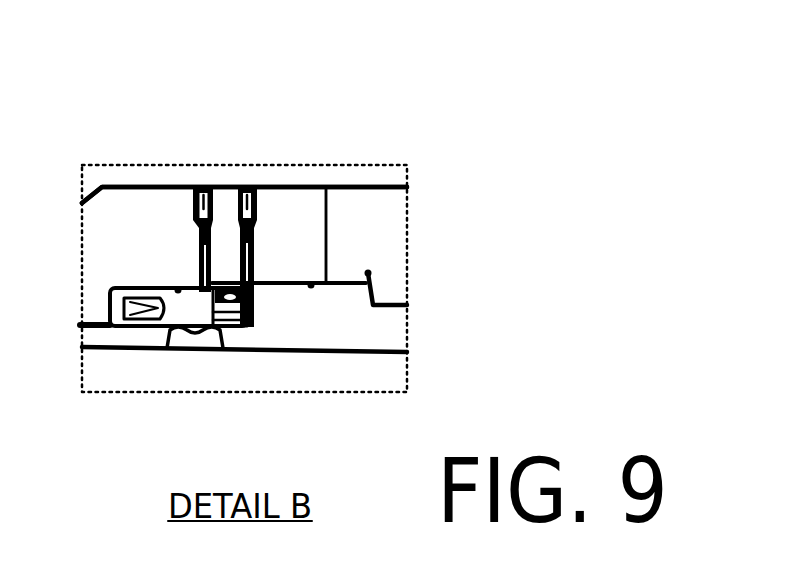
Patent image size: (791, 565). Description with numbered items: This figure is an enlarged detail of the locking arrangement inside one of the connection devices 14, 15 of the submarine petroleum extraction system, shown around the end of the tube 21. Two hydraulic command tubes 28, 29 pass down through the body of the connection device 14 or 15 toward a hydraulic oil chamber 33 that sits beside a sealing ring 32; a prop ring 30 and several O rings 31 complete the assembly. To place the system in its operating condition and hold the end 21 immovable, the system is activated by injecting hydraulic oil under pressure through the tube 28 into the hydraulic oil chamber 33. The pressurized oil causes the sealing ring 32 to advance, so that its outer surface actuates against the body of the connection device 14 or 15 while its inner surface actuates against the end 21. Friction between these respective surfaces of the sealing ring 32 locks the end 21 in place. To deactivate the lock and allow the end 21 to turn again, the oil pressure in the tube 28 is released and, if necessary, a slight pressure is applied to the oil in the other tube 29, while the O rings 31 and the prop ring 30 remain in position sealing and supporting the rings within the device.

The connection device 14 is at (321, 241).
The connection device 15 is at (386, 264).
The end of the tube 21 is at (373, 335).
The hydraulic command tube 28 is at (214, 186).
The hydraulic command tube 29 is at (247, 186).
The prop ring 30 is at (368, 273).
The O ring 31 is at (178, 290).
The sealing ring 32 is at (150, 287).
The hydraulic oil chamber 33 is at (226, 330).